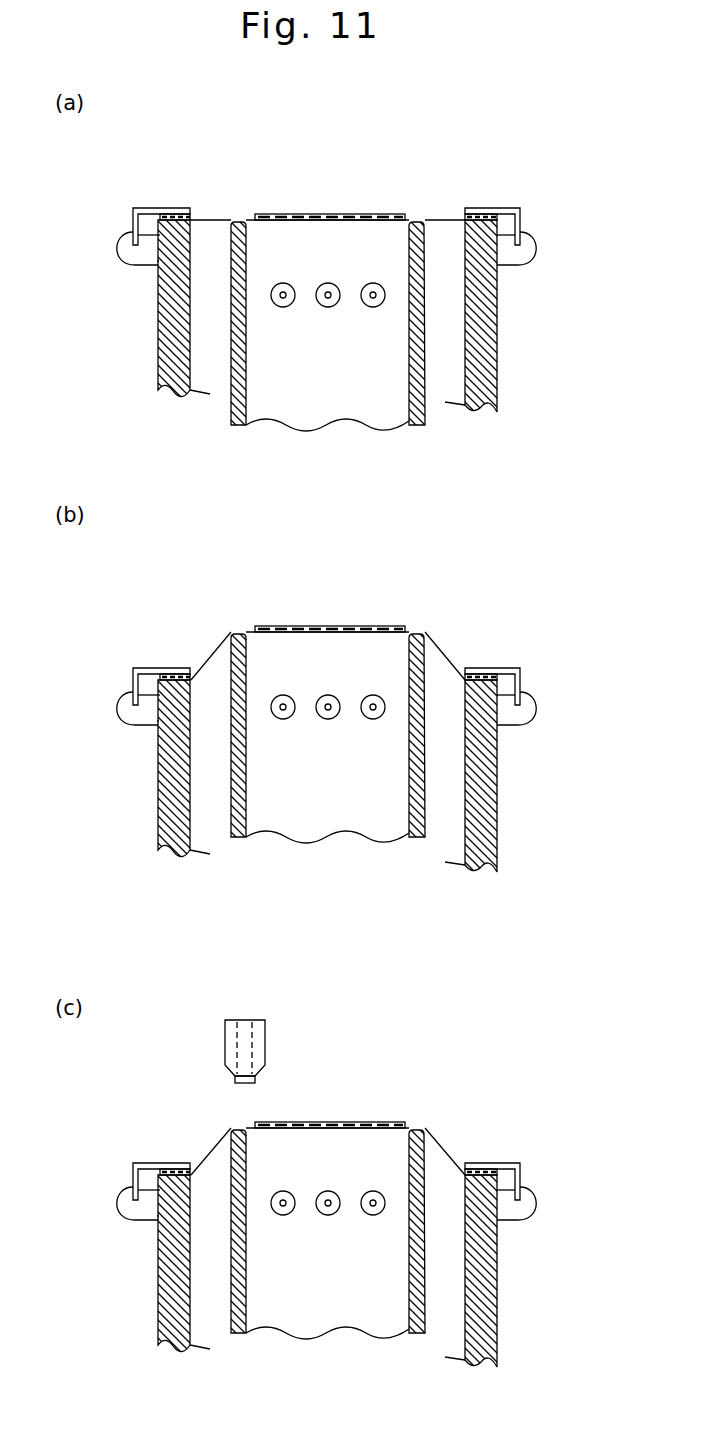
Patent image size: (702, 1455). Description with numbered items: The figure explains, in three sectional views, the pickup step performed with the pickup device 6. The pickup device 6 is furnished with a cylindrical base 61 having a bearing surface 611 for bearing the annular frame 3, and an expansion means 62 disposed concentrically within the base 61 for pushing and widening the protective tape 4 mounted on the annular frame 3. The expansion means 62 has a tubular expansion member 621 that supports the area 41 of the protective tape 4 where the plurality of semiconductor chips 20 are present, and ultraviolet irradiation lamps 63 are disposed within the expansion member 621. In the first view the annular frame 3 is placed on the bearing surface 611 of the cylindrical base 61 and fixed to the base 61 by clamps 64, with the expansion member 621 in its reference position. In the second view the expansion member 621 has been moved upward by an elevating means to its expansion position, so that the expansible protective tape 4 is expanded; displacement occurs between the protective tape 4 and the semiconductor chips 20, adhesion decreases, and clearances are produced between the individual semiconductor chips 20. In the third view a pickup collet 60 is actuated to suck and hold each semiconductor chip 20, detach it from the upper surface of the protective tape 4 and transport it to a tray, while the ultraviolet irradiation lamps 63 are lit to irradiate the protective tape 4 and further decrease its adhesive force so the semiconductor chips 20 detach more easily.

The annular frame 3 is at (177, 212).
The protective tape 4 is at (440, 218).
The pickup device 6 is at (166, 170).
The semiconductor chip 20 is at (270, 213).
The area 41 is at (346, 224).
The pickup collet 60 is at (228, 1038).
The cylindrical base 61 is at (154, 312).
The expansion means 62 is at (226, 364).
The ultraviolet irradiation lamps 63 is at (283, 307).
The clamps 64 is at (132, 226).
The bearing surface 611 is at (166, 210).
The expansion member 621 is at (418, 330).